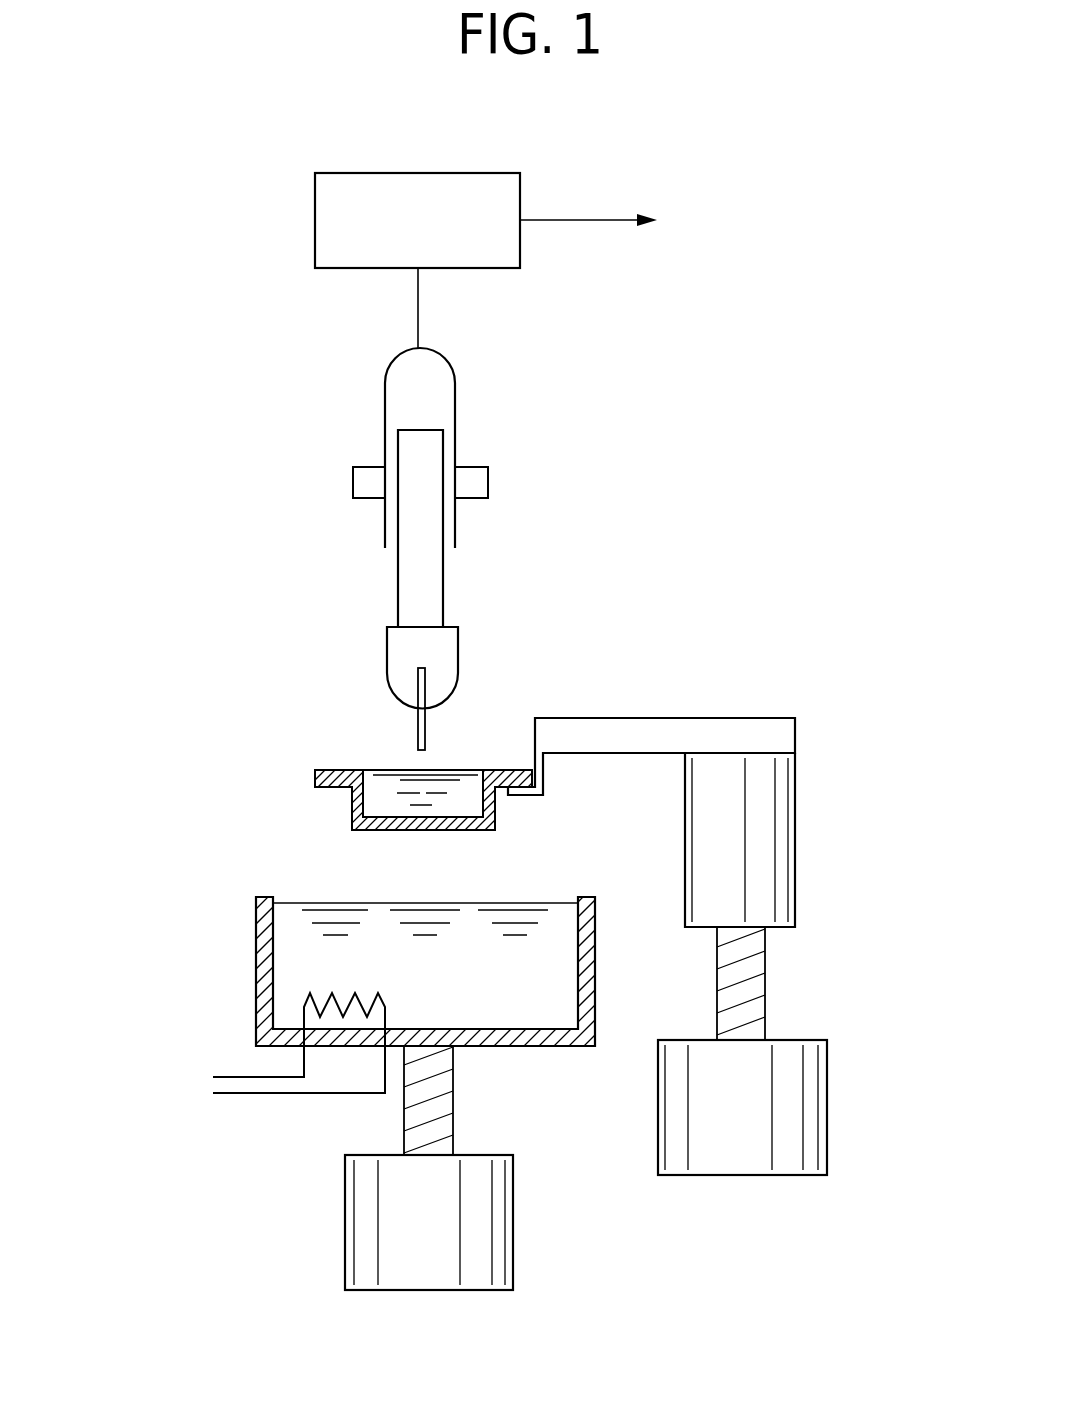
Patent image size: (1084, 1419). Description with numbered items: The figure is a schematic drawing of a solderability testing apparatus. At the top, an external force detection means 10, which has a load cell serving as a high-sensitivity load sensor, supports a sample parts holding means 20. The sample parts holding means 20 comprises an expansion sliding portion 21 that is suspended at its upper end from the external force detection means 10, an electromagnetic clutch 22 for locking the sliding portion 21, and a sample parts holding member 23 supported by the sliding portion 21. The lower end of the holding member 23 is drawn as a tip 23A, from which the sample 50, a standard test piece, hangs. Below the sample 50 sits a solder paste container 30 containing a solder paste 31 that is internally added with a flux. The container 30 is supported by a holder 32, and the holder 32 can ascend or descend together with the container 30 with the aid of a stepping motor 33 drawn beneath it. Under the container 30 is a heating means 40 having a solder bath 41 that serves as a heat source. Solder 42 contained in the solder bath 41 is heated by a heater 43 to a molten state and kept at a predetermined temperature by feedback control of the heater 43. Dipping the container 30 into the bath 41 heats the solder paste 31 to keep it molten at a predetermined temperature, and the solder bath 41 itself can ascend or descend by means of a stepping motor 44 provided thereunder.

The external force detection means 10 is at (315, 210).
The sample parts holding means 20 is at (467, 528).
The expansion sliding portion 21 is at (385, 398).
The electromagnetic clutch 22 is at (353, 480).
The sample parts holding member 23 is at (443, 583).
The probe tip 23A is at (387, 657).
The sample 50 is at (418, 728).
The solder paste container 30 is at (412, 760).
The solder paste 31 is at (467, 797).
The holder 32 is at (727, 718).
The stepping motor 33 is at (748, 1175).
The heating means 40 is at (427, 1082).
The solder bath 41 is at (256, 965).
The solder 42 is at (464, 955).
The heater 43 is at (258, 1097).
The stepping motor 44 is at (410, 1290).